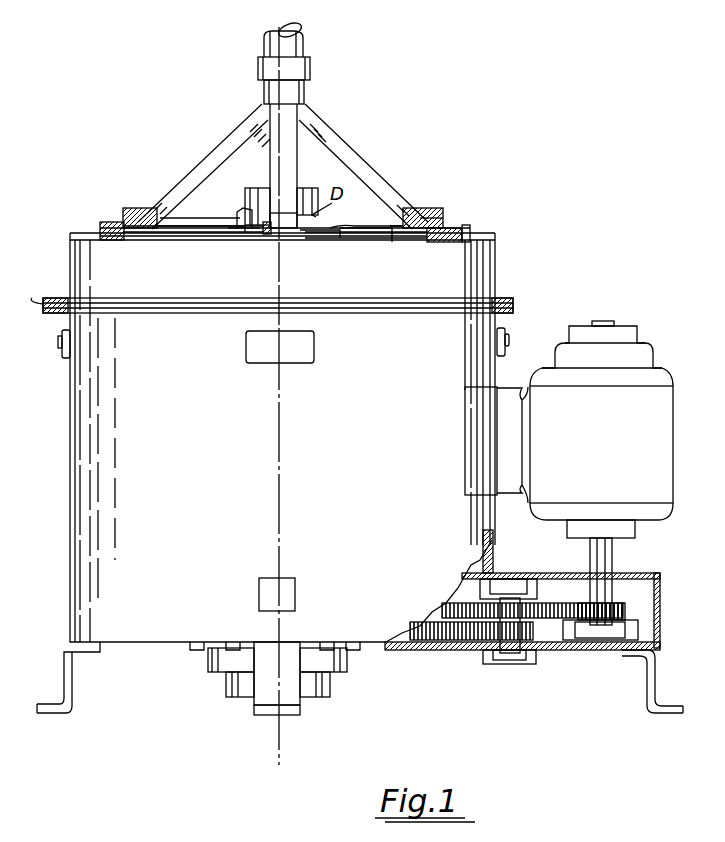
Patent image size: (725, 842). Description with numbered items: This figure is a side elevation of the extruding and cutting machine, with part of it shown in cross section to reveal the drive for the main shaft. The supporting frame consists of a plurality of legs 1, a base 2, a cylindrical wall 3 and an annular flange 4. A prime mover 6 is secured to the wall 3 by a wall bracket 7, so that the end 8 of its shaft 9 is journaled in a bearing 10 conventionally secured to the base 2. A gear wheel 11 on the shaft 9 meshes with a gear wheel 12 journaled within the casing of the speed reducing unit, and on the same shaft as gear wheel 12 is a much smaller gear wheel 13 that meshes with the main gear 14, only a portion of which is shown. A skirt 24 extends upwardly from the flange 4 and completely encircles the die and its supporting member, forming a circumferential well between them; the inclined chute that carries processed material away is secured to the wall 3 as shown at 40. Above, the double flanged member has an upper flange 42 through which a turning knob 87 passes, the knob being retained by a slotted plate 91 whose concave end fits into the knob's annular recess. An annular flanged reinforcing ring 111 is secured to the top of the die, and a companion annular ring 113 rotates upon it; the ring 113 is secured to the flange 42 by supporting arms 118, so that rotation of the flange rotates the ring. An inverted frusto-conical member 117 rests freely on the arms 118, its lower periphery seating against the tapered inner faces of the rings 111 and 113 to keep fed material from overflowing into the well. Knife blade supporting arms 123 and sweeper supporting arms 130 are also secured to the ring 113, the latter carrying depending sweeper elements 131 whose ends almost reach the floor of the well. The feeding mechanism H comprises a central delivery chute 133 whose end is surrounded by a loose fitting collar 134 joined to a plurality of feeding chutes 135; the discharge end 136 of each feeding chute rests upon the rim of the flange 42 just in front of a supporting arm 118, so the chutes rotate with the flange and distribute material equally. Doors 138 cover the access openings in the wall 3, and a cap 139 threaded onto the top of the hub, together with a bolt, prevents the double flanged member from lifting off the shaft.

The legs 1 is at (72, 700).
The base 2 is at (250, 168).
The cylindrical wall 3 is at (112, 506).
The annular flange 4 is at (513, 308).
The prime mover 6 is at (664, 440).
The wall bracket 7 is at (503, 395).
The end of shaft 8 is at (598, 640).
The shaft 9 is at (612, 555).
The bearing 10 is at (612, 640).
The gear wheel 11 is at (622, 610).
The gear wheel 12 is at (545, 600).
The gear wheel 13 is at (513, 650).
The main gear 14 is at (458, 640).
The skirt 24 is at (490, 258).
The chute connection 40 is at (292, 597).
The upper flange 42 is at (322, 222).
The turning knob 87 is at (245, 210).
The slotted plate 91 is at (235, 222).
The annular flanged reinforcing ring 111 is at (385, 242).
The companion annular ring 113 is at (405, 240).
The inverted frusto-conical member 117 is at (432, 226).
The supporting arms 118 is at (212, 238).
The knife blade supporting arms 123 is at (98, 222).
The sweeper supporting arms 130 is at (172, 232).
The sweeper element 131 is at (138, 240).
The central delivery chute 133 is at (303, 45).
The loose fitting collar 134 is at (256, 70).
The feeding chutes 135 is at (242, 136).
The discharge end 136 is at (150, 208).
The doors 138 is at (330, 362).
The cap 139 is at (305, 196).
The feeding mechanism H is at (308, 88).